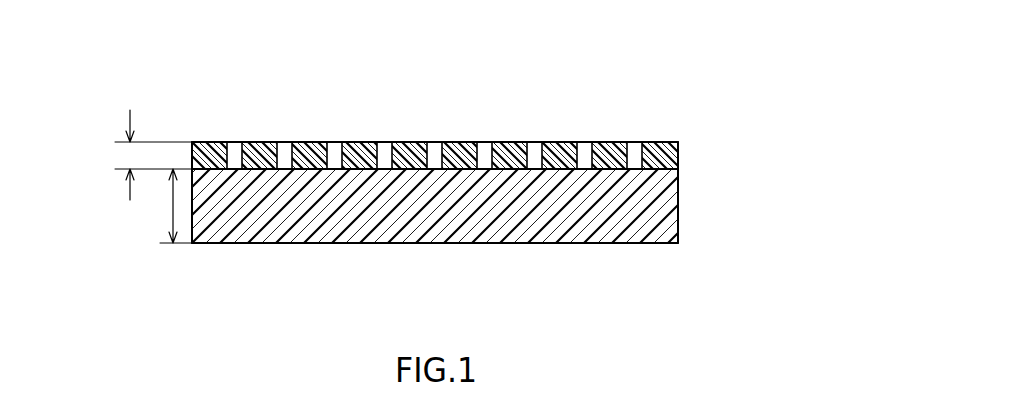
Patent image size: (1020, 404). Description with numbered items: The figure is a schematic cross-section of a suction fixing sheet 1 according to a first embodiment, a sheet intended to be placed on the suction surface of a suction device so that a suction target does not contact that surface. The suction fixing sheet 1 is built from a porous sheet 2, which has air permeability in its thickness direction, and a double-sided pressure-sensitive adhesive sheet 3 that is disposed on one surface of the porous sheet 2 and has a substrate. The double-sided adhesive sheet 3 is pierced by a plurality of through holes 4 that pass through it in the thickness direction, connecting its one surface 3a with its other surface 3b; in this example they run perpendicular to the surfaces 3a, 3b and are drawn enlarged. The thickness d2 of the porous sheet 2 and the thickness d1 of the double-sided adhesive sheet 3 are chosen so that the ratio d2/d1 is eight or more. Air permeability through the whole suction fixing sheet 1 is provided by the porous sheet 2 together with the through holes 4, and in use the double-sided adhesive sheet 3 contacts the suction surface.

The suction fixing sheet 1 is at (535, 97).
The porous sheet 2 is at (664, 210).
The double-sided pressure-sensitive adhesive sheet 3 is at (664, 155).
The one surface of the double-sided adhesive sheet 3a is at (562, 143).
The other surface of the double-sided adhesive sheet 3b is at (562, 169).
The through holes 4 is at (285, 143).
The thickness of the double-sided adhesive sheet d1 is at (142, 155).
The thickness of the porous sheet d2 is at (167, 206).